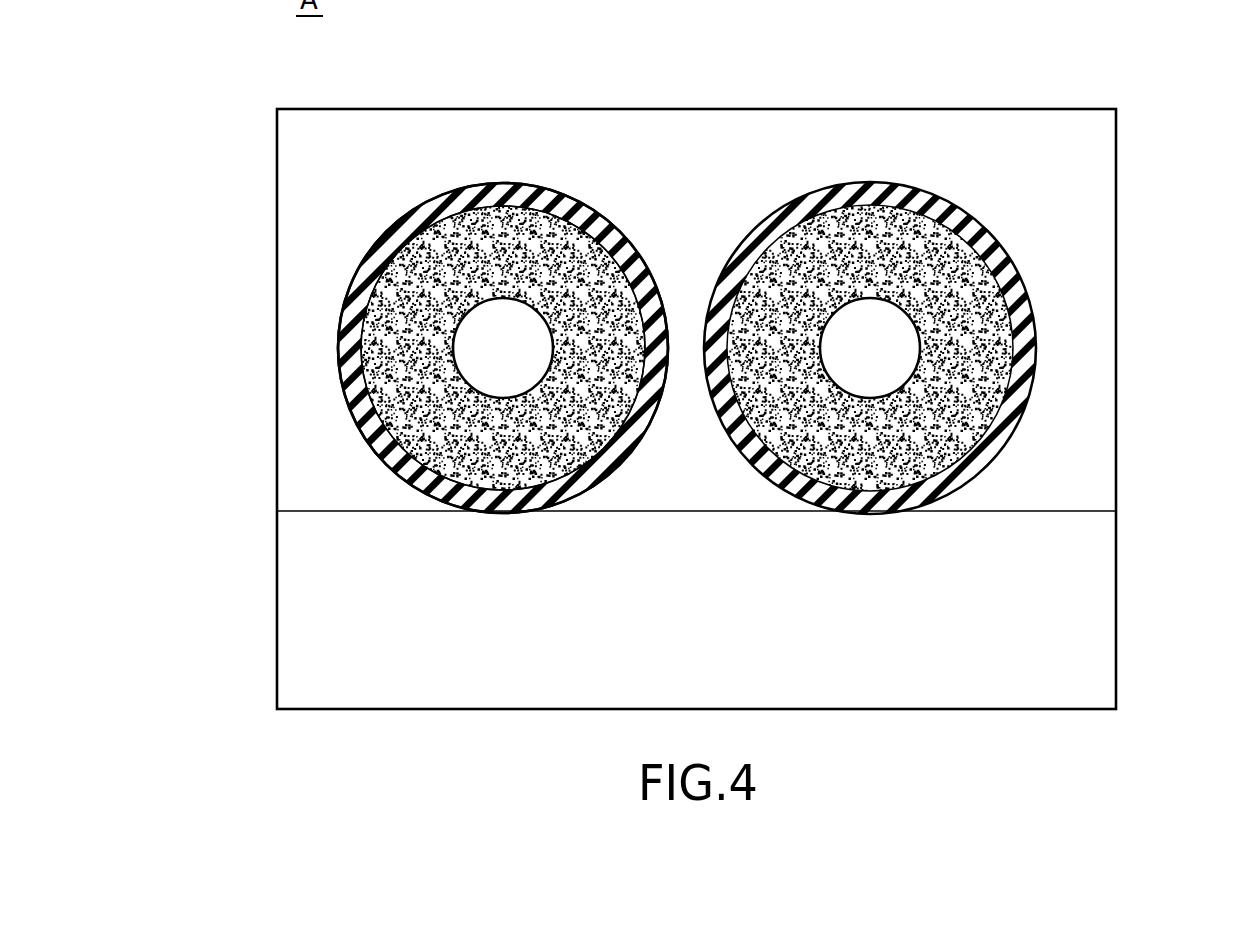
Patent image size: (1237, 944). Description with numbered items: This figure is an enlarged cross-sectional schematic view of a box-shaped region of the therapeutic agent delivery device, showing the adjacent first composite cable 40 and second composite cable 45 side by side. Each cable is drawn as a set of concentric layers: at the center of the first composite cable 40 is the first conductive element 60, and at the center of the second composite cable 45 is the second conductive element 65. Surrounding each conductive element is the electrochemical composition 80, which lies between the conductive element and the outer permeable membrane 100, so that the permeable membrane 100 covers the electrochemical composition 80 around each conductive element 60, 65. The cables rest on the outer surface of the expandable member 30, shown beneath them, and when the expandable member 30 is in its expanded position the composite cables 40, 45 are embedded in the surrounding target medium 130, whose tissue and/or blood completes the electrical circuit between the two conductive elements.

The expandable member 30 is at (1116, 617).
The target location or medium 130 is at (1116, 181).
The first composite cable 40 is at (553, 187).
The second composite cable 45 is at (908, 183).
The permeable membrane 100 is at (365, 255).
The electrochemical composition 80 is at (417, 373).
The first conductive element 60 is at (488, 363).
The second conductive element 65 is at (855, 363).